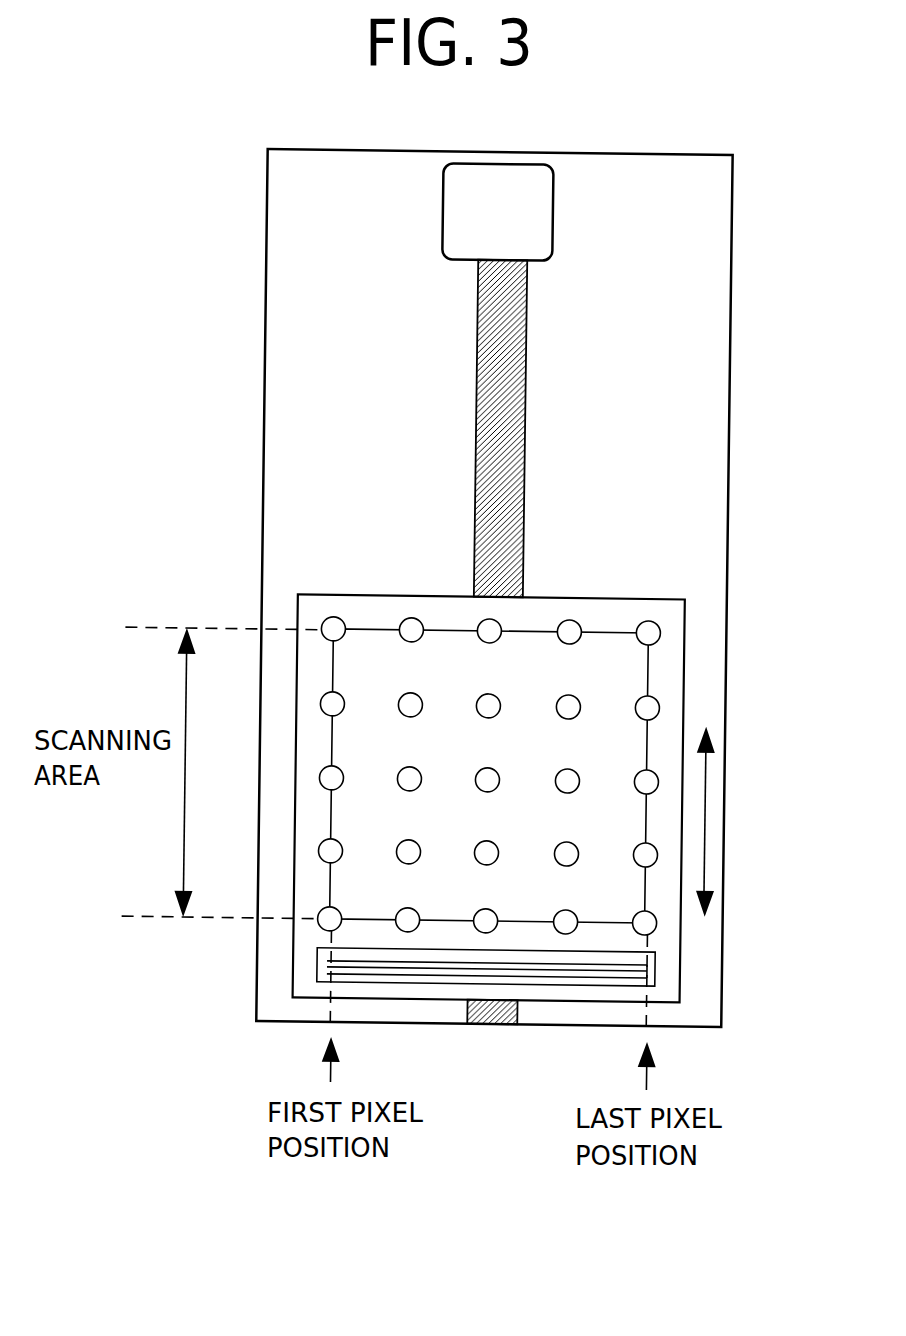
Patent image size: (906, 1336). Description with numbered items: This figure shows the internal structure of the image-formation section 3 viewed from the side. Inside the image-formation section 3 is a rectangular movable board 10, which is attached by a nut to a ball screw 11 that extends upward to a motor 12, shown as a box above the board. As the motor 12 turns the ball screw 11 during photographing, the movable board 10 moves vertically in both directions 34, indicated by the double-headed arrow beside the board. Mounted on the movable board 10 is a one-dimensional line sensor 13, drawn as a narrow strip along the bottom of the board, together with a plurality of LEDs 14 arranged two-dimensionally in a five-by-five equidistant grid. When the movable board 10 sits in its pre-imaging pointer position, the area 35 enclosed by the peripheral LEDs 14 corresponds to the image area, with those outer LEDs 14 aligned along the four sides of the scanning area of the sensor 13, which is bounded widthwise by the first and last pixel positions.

The image-formation section 3 is at (266, 184).
The movable board 10 is at (300, 597).
The ball screw 11 is at (487, 352).
The motor 12 is at (452, 218).
The sensor 13 is at (655, 966).
The LEDs 14 is at (652, 637).
The directions 34 is at (705, 781).
The area 35 is at (623, 680).